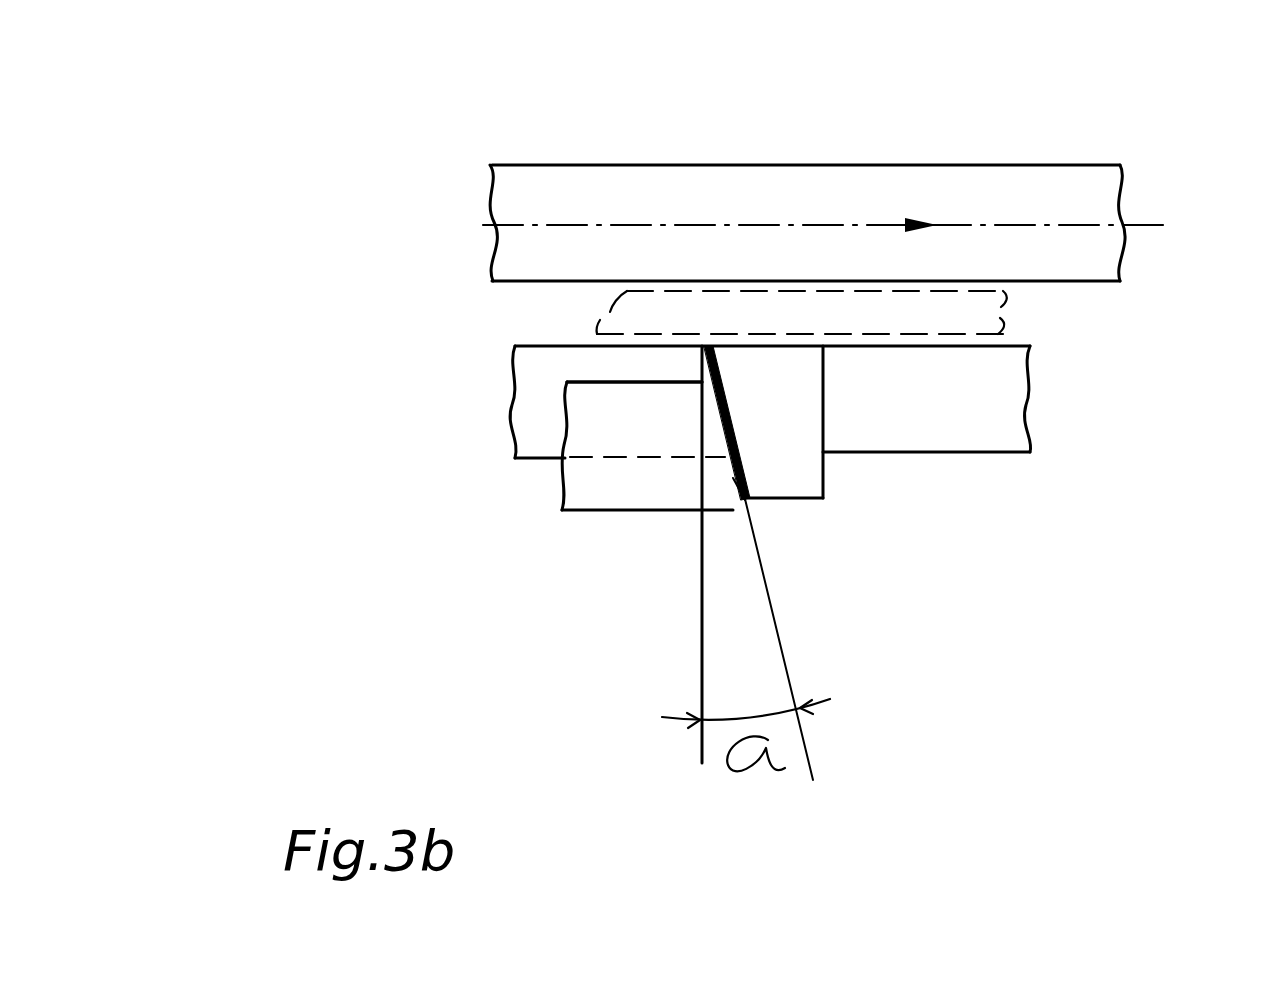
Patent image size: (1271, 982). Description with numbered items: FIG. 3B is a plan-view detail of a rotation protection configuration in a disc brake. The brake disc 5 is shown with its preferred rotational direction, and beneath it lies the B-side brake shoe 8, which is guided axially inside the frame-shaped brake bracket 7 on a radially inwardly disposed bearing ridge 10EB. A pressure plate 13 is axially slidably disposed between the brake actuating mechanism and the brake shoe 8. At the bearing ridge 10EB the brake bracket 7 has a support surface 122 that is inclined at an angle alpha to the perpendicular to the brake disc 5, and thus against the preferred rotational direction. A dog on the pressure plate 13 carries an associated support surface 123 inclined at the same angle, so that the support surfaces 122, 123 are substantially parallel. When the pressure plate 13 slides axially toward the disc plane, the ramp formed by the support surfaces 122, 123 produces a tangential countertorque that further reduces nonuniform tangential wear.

The brake disc 5 is at (1060, 187).
The brake shoe 8 is at (1017, 310).
The brake bracket 7 is at (977, 412).
The pressure plate 13 is at (593, 483).
The support surface 122 is at (728, 412).
The support surface 123 is at (733, 478).
The bearing ridge 10EB is at (797, 408).